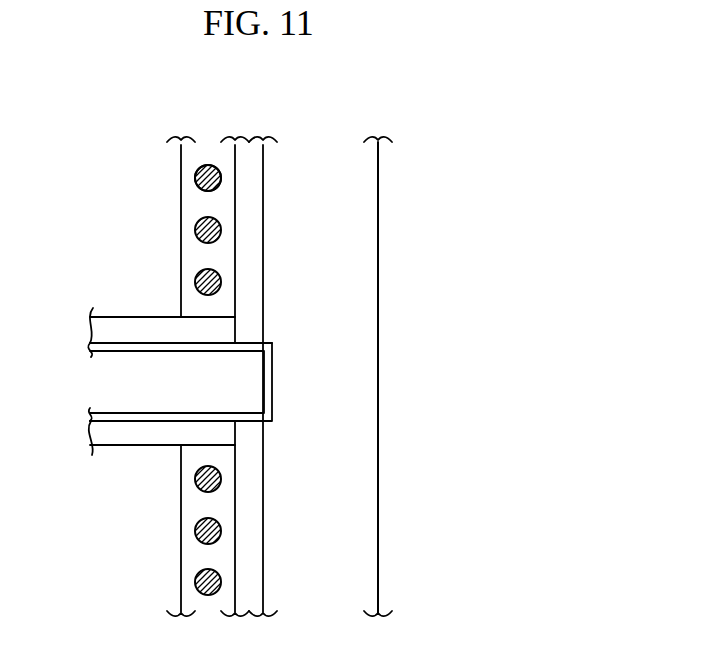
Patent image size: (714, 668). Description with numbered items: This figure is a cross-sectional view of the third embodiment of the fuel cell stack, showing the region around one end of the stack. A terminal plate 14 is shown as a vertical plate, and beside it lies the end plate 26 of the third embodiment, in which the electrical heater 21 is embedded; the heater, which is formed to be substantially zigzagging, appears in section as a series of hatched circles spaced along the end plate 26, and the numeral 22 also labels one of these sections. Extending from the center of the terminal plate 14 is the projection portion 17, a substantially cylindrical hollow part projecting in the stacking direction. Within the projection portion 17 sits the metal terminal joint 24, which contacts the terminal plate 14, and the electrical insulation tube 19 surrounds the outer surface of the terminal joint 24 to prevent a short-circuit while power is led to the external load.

The terminal plate 14 is at (370, 280).
The projection portion 17 is at (133, 310).
The electrical insulation tube 19 is at (138, 447).
The electrical heater 21 is at (206, 165).
The through hole 22 is at (198, 187).
The terminal joint 24 is at (127, 415).
The end plate 26 is at (190, 158).